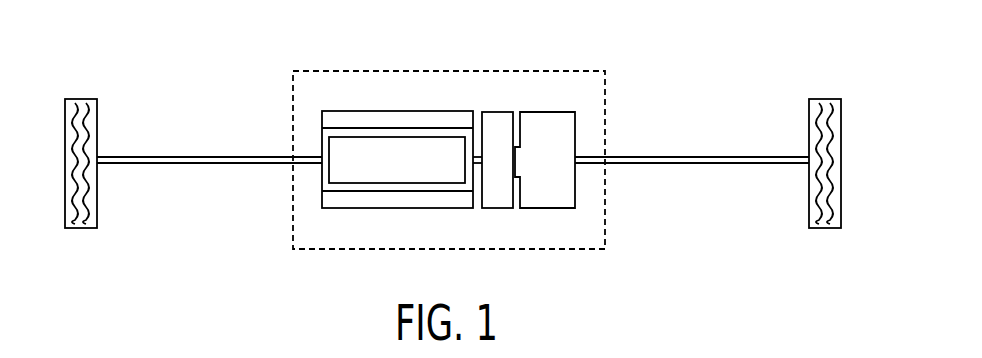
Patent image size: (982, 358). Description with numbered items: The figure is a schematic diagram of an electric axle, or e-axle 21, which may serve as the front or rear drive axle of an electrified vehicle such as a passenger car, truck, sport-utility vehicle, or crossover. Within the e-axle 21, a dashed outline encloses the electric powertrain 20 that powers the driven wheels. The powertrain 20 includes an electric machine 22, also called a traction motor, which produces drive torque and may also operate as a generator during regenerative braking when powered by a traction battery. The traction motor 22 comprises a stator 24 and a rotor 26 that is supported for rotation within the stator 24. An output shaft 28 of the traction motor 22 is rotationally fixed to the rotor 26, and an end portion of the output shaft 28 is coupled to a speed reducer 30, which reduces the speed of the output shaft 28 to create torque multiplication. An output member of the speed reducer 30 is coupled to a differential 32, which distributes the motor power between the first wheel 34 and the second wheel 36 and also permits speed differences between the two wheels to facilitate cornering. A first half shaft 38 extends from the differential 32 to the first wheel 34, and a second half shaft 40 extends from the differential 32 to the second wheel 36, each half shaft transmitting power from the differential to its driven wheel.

The electric powertrain 20 is at (575, 70).
The electric axle 21 is at (255, 88).
The electric machine 22 is at (351, 110).
The stator 24 is at (395, 120).
The rotor 26 is at (407, 170).
The output shaft 28 is at (477, 160).
The speed reducer 30 is at (498, 127).
The differential 32 is at (557, 170).
The first wheel 34 is at (820, 100).
The second wheel 36 is at (78, 98).
The first half shaft 38 is at (667, 162).
The second half shaft 40 is at (147, 155).